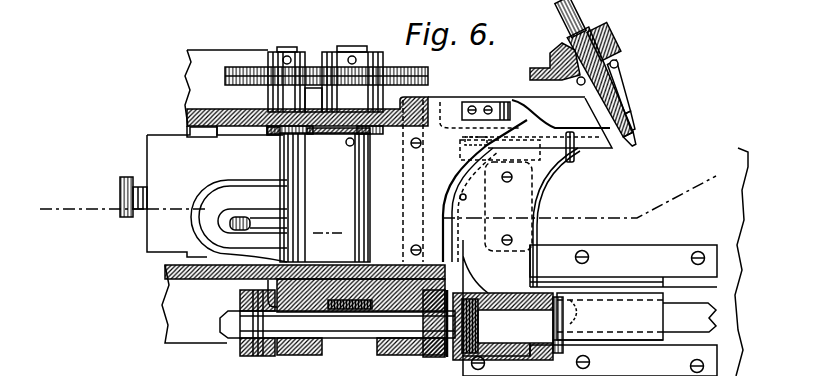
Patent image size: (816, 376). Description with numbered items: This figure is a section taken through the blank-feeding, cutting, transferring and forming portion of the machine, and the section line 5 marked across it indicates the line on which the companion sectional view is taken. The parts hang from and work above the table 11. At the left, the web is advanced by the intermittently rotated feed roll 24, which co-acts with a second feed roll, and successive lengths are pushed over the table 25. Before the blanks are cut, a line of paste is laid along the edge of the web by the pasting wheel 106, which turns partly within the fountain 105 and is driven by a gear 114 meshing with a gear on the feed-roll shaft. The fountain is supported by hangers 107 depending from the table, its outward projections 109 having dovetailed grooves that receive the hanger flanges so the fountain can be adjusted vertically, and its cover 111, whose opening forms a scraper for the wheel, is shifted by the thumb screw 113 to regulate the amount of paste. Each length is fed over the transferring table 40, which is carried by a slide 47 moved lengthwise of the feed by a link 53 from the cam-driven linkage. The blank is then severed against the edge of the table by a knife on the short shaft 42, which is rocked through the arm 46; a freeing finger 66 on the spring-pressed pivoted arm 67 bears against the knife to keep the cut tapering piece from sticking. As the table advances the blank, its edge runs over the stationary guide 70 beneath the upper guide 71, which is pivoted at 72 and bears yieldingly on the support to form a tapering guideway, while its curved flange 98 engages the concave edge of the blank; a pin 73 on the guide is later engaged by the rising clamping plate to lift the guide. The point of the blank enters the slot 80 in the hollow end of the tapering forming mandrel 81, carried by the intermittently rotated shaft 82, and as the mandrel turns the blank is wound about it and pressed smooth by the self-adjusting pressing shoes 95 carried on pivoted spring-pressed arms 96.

The section line 5 is at (378, 189).
The table 11 is at (455, 213).
The feed roll 24 is at (325, 197).
The table 25 is at (471, 226).
The transferring table 40 is at (497, 259).
The short shaft 42 is at (386, 337).
The arm 46 is at (259, 356).
The slide 47 is at (543, 325).
The link 53 is at (717, 322).
The freeing finger 66 is at (463, 197).
The pivoted arm 67 is at (490, 149).
The stationary guide 70 is at (560, 104).
The upper guide 71 is at (605, 147).
The pivot 72 is at (508, 103).
The pin 73 is at (572, 161).
The slot 80 is at (638, 144).
The forming mandrel 81 is at (633, 121).
The shaft 82 is at (578, 15).
The pressing shoes 95 is at (628, 111).
The spring pressed arms 96 is at (627, 84).
The flange 98 is at (545, 193).
The fountain 105 is at (261, 56).
The pasting wheel 106 is at (239, 221).
The hangers 107 is at (356, 56).
The outward projections 109 is at (296, 56).
The cover 111 is at (258, 192).
The thumb screw 113 is at (121, 197).
The gear 114 is at (225, 73).